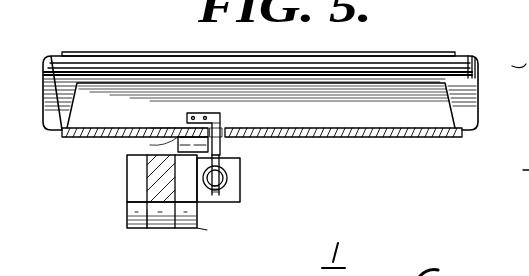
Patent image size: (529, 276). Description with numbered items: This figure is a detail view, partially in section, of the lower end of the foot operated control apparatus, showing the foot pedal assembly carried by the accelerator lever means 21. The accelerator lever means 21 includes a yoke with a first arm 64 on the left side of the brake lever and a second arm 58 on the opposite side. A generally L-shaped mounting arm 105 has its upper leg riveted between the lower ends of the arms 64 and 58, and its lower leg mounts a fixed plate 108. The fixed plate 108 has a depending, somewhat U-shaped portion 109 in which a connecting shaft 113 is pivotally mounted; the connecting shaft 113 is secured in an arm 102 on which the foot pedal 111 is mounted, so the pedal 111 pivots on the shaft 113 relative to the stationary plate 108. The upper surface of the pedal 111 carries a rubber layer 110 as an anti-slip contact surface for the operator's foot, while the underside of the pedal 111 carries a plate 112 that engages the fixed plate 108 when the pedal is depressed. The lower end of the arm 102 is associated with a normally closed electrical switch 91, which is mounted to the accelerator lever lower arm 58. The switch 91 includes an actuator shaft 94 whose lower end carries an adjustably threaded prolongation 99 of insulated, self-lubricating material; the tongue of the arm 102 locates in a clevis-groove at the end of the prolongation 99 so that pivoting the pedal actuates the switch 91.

The rubber layer 110 is at (410, 52).
The foot pedal 111 is at (122, 57).
The plate 112 is at (425, 104).
The connecting shaft 113 is at (178, 128).
The fixed plate 108 is at (400, 140).
The arm 102 is at (222, 125).
The U-shaped portion 109 is at (150, 145).
The prolongation 99 is at (235, 173).
The normally closed electrical switch 91 is at (240, 195).
The first arm 64 is at (127, 217).
The mounting arm 105 is at (155, 228).
The second arm 58 is at (200, 230).
The accelerator lever means 21 is at (528, 58).
The actuator shaft 94 is at (528, 170).